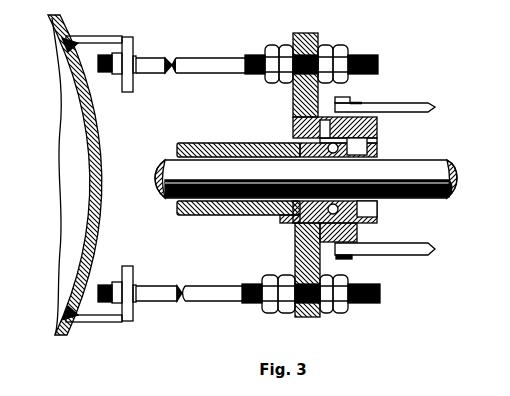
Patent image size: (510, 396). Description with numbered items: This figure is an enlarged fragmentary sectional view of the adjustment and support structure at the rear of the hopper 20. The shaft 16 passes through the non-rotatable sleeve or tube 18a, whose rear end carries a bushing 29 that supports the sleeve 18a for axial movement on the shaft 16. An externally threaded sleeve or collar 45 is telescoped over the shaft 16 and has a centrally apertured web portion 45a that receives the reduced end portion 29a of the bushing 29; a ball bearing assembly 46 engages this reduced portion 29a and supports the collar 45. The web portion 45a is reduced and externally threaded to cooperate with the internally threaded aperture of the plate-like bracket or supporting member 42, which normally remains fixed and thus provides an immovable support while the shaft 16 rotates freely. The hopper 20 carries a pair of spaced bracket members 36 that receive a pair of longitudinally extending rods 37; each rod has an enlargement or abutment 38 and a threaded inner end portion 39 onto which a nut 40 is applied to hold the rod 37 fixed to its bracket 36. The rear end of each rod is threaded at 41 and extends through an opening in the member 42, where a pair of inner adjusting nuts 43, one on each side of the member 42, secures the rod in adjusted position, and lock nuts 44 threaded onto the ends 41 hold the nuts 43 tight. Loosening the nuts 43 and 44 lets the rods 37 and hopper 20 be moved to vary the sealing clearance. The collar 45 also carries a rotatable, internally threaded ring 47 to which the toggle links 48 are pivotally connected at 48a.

The shaft 16 is at (163, 165).
The sleeve or tube 18a is at (232, 147).
The hopper 20 is at (98, 190).
The bushing 29 is at (293, 222).
The reduced end portion of the bushing 29a is at (362, 202).
The bracket members 36 is at (100, 36).
The rods 37 is at (185, 62).
The enlargement or abutment 38 is at (130, 73).
The threaded inner end portion 39 is at (103, 73).
The nuts 40 is at (122, 52).
The threaded outer end portion 41 is at (375, 58).
The plate-like bracket or supporting member 42 is at (305, 33).
The inner adjusting nuts 43 is at (287, 50).
The lock nuts 44 is at (267, 50).
The externally threaded sleeve or collar 45 is at (374, 118).
The web portion of the collar 45a is at (374, 148).
The ball bearing assembly 46 is at (374, 136).
The internally threaded ring 47 is at (357, 106).
The links 48 is at (420, 104).
The pivotal connection 48a is at (343, 97).